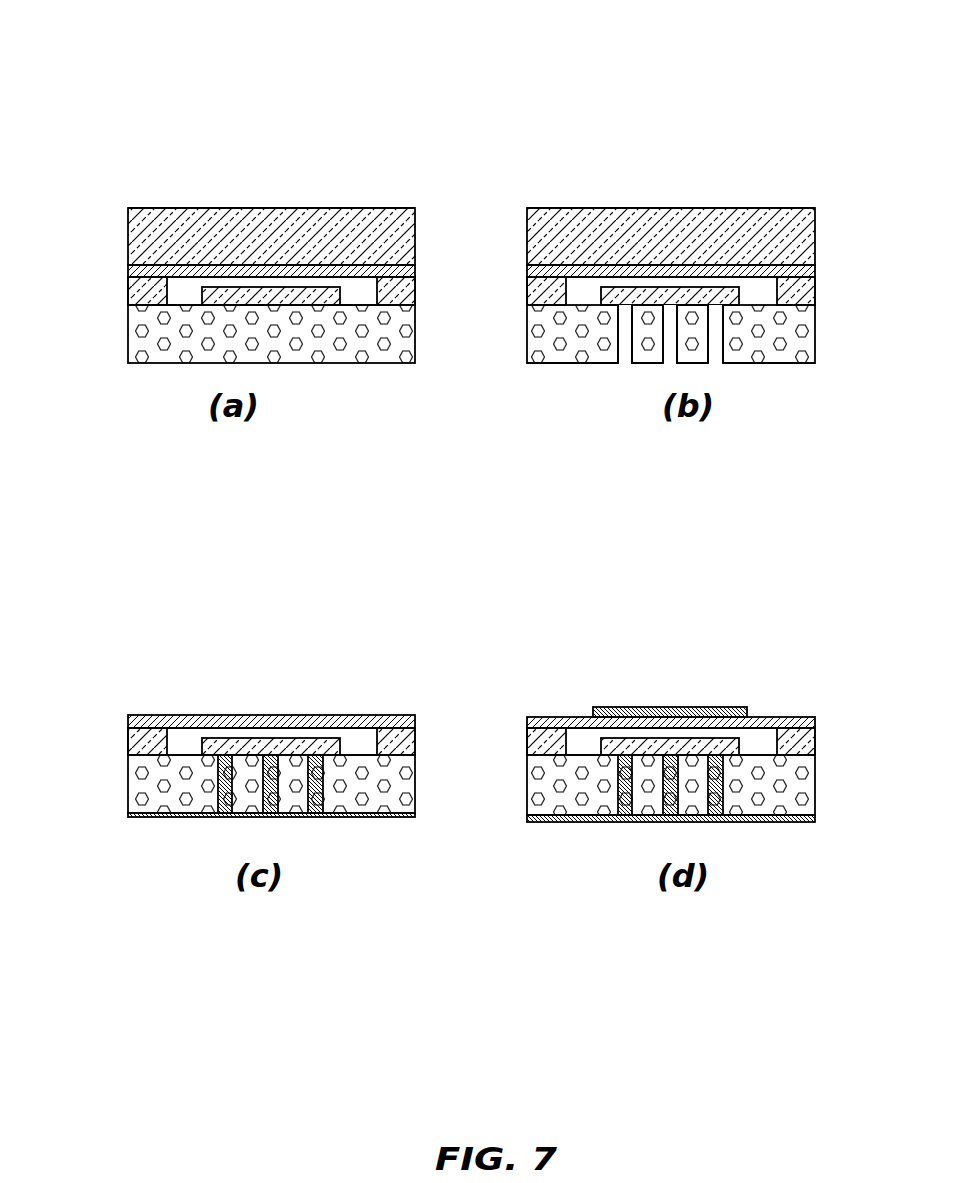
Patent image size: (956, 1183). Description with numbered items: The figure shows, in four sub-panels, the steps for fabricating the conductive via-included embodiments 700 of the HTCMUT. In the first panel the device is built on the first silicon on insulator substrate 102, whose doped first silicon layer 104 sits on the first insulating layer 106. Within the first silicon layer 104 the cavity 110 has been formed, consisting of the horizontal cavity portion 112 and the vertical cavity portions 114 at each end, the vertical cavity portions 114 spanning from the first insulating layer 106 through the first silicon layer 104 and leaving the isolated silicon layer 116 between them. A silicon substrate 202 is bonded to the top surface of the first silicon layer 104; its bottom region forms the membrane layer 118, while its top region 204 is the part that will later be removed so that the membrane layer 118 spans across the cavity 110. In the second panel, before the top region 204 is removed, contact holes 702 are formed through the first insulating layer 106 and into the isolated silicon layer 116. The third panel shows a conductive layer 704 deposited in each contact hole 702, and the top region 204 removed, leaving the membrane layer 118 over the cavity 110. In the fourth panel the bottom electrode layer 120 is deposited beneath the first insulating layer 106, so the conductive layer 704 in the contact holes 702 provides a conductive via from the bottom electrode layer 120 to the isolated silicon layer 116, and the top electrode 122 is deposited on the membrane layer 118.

The conductive via-included embodiments 700 is at (107, 85).
The silicon substrate 202 is at (117, 228).
The top region 204 is at (415, 222).
The first silicon layer 104 is at (415, 288).
The first silicon on insulator (SOI) substrate 102 is at (117, 301).
The cavity 110 is at (182, 293).
The horizontal cavity portion 112 is at (212, 275).
The isolated silicon layer 116 is at (257, 287).
The membrane layer 118 is at (348, 267).
The vertical cavity portions 114 is at (377, 288).
The first insulating layer 106 is at (415, 345).
The contact hole 702 is at (723, 328).
The conductive layer 704 is at (323, 787).
The bottom electrode layer 120 is at (177, 817).
The top electrode 122 is at (712, 705).